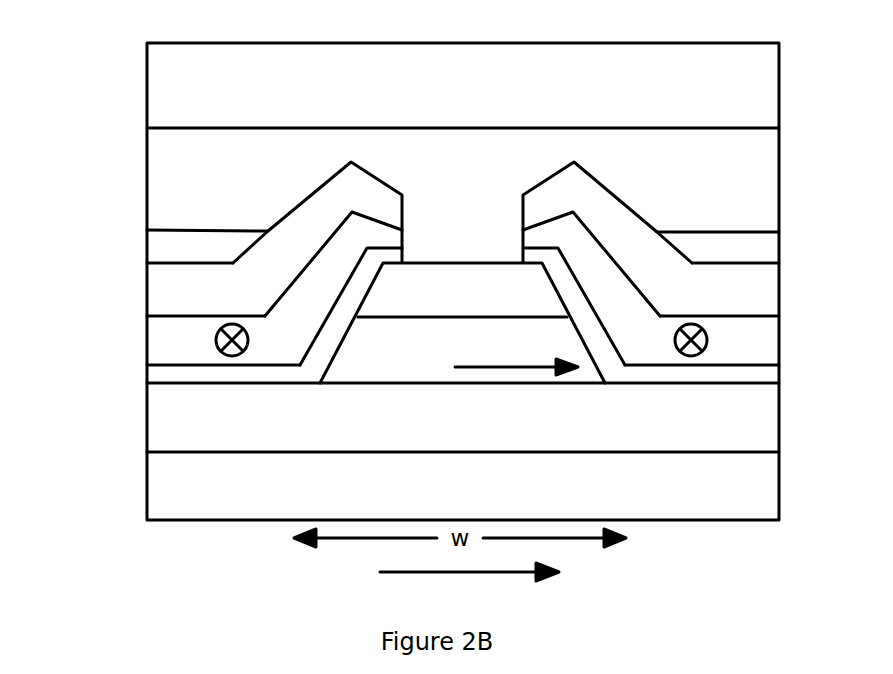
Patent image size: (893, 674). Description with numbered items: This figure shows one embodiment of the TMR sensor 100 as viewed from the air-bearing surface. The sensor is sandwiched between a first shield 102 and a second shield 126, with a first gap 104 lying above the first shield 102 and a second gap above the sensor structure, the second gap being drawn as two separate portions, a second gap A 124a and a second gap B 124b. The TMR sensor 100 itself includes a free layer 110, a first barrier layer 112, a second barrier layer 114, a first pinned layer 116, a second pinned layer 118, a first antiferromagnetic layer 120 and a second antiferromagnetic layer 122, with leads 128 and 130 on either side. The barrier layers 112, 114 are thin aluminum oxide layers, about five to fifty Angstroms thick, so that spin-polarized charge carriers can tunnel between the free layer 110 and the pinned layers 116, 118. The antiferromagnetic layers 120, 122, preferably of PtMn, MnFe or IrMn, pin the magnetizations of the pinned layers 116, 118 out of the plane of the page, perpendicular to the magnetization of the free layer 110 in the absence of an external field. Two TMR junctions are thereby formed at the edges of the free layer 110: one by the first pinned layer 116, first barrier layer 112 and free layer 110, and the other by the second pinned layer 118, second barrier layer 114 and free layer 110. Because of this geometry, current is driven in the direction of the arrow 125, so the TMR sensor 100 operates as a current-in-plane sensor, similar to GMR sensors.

The TMR sensor 100 is at (80, 162).
The first shield 102 is at (779, 467).
The first gap 104 is at (147, 437).
The free layer 110 is at (589, 385).
The first barrier layer 112 is at (147, 372).
The second barrier layer 114 is at (779, 373).
The first pinned layer 116 is at (147, 350).
The second pinned layer 118 is at (779, 350).
The first antiferromagnetic layer 120 is at (147, 297).
The second antiferromagnetic layer 122 is at (779, 297).
The second gap A 124a is at (505, 262).
The second gap B 124b is at (779, 180).
The arrow 125 is at (402, 573).
The second shield 126 is at (147, 105).
The lead 128 is at (147, 250).
The lead 130 is at (779, 248).